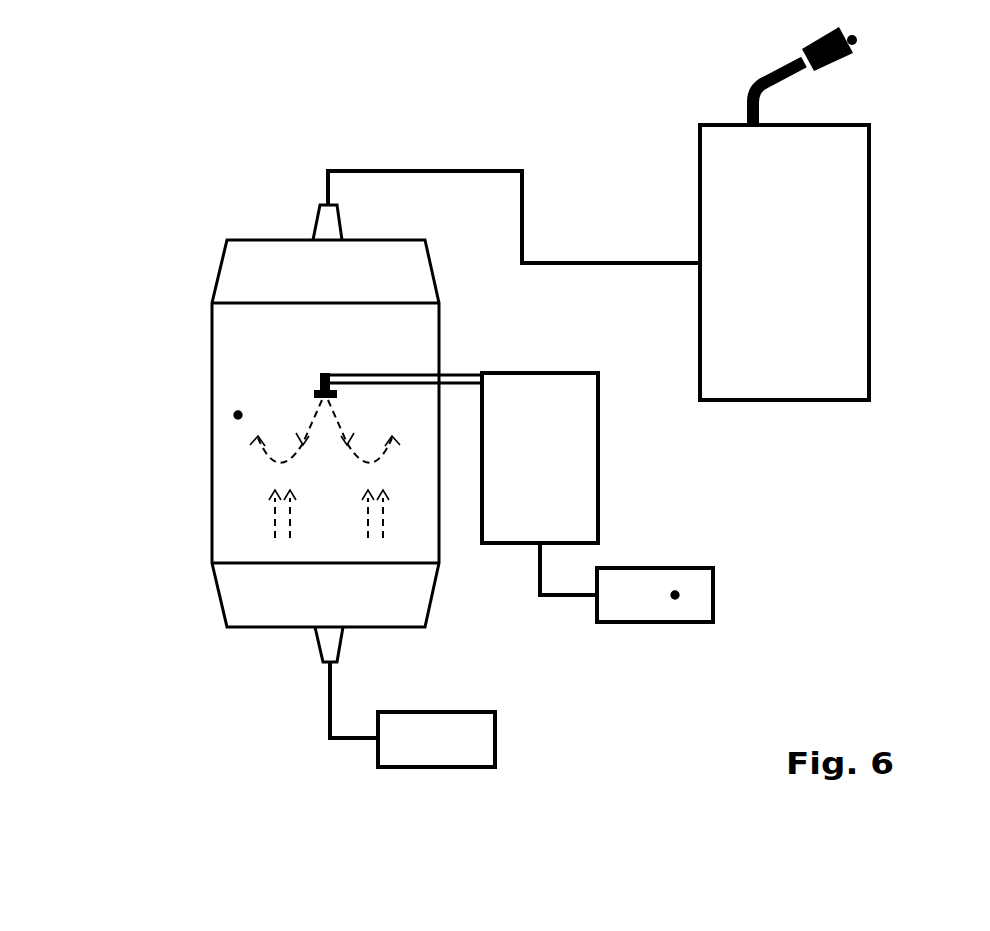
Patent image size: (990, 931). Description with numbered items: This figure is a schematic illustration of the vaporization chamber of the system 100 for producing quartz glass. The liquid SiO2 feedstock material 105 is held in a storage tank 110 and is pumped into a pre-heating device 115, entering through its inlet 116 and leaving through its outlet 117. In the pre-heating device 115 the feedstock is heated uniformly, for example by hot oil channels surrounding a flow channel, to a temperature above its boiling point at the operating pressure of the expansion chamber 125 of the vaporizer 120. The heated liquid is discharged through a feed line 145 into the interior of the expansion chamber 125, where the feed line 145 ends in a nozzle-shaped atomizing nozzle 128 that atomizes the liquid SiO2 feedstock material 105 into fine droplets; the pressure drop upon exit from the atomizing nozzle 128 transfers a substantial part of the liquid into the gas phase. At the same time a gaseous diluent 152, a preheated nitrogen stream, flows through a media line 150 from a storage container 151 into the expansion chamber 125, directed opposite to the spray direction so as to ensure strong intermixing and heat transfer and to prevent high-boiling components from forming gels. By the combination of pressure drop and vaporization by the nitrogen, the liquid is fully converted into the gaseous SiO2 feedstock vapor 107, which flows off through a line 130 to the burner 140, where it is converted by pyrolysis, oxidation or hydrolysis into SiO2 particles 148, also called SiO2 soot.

The system for producing quartz glass 100 is at (190, 228).
The liquid SiO2 feedstock material 105 is at (679, 597).
The SiO2 feedstock vapor 107 is at (263, 456).
The storage tank 110 is at (713, 597).
The pre-heating device 115 is at (598, 458).
The inlet 116 is at (537, 575).
The outlet 117 is at (487, 368).
The vaporizer 120 is at (214, 272).
The expansion chamber 125 is at (235, 415).
The atomizing nozzle 128 is at (315, 393).
The line 130 is at (418, 170).
The burner 140 is at (768, 78).
The feed line 145 is at (407, 372).
The SiO2 particles 148 is at (863, 27).
The media line 150 is at (327, 705).
The storage container 151 is at (437, 768).
The diluent 152 is at (277, 525).